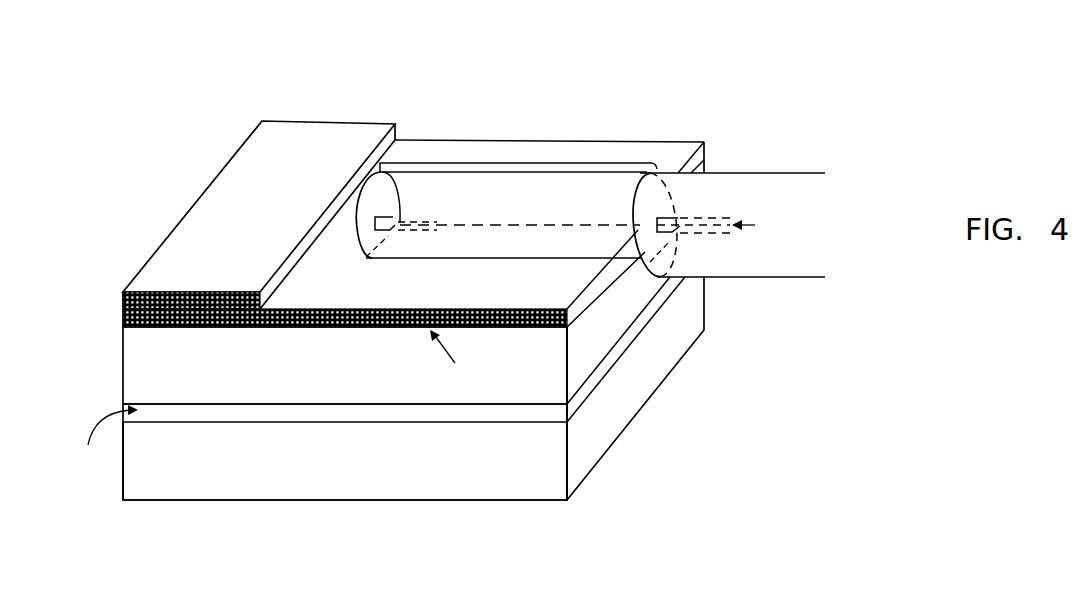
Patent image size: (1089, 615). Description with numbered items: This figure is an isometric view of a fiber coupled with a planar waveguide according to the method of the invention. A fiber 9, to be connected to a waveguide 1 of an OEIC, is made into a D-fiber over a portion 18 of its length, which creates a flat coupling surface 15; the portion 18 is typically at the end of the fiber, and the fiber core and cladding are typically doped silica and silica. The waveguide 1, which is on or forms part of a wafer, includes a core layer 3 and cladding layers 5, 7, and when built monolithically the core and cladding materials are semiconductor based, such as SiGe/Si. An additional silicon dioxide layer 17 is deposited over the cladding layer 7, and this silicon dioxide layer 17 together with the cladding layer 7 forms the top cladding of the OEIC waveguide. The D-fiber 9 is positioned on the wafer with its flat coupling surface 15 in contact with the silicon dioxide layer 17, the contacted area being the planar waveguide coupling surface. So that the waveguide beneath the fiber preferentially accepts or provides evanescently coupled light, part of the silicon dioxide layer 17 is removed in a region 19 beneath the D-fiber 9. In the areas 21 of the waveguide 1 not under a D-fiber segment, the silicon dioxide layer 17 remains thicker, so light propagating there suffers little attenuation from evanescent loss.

The waveguide 1 is at (618, 103).
The core layer 3 is at (577, 403).
The cladding layer 5 is at (163, 384).
The cladding layer 7 is at (163, 477).
The fiber 9 is at (790, 174).
The coupling surface 15 is at (532, 242).
The silicon dioxide layer 17 is at (205, 301).
The portion 18 is at (517, 163).
The region 19 is at (440, 147).
The areas 21 is at (312, 157).